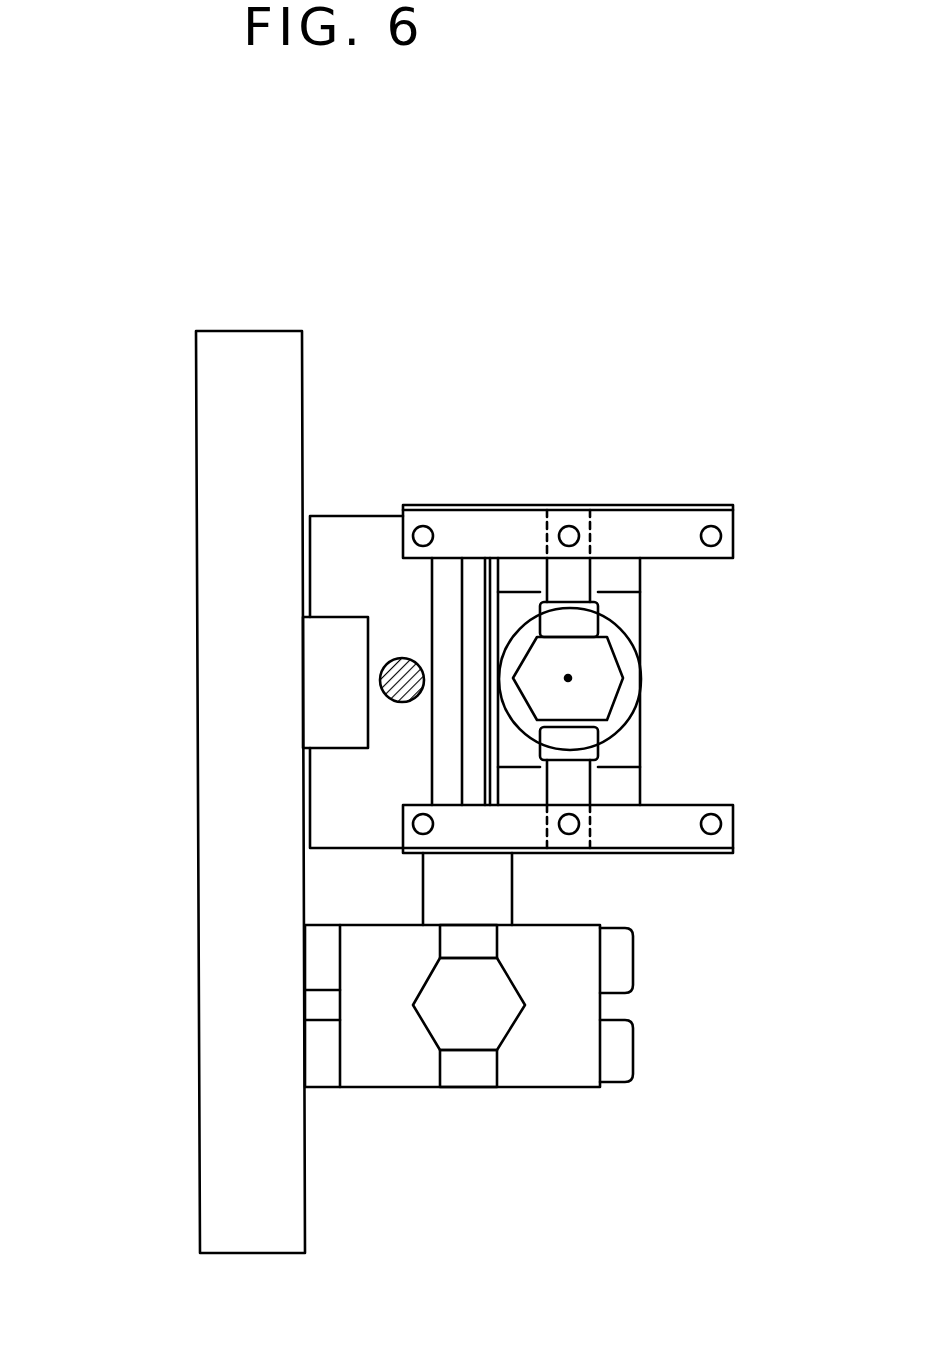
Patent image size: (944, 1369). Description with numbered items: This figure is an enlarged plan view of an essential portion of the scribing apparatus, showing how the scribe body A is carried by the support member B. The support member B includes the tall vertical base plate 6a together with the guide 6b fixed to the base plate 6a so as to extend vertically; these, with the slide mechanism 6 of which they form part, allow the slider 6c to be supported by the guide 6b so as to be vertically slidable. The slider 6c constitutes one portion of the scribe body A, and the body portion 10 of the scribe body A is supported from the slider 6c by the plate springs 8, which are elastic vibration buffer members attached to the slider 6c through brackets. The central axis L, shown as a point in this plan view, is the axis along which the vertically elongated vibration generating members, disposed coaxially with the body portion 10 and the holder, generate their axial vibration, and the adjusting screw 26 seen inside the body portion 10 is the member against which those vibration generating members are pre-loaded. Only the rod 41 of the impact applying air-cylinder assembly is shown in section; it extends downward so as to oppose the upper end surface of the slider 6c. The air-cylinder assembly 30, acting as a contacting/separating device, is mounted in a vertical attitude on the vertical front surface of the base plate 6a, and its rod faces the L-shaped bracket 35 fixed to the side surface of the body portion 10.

The support member B is at (181, 732).
The slide mechanism 6 is at (278, 556).
The base plate 6a is at (250, 470).
The guide 6b is at (337, 658).
The slider 6c is at (375, 516).
The rod 41 is at (380, 683).
The plate springs 8 is at (667, 532).
The body portion 10 is at (643, 613).
The adjusting screw 26 is at (607, 648).
The central axis L is at (568, 678).
The scribe body A is at (610, 673).
The air-cylinder assembly 30 is at (560, 1062).
The L-shaped bracket 35 is at (467, 1067).